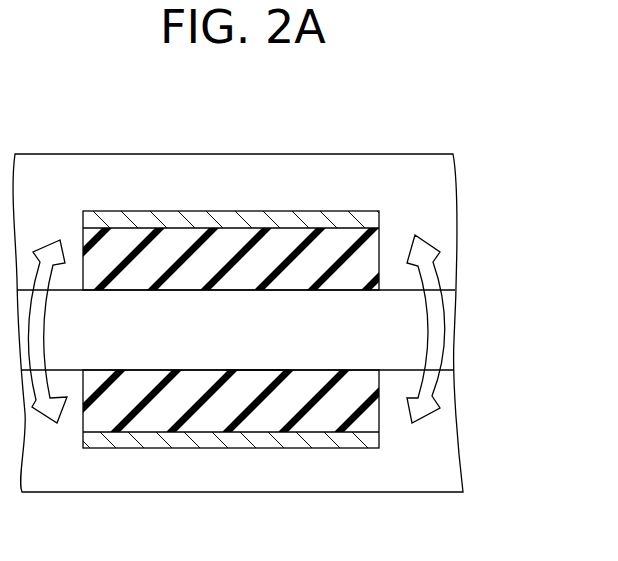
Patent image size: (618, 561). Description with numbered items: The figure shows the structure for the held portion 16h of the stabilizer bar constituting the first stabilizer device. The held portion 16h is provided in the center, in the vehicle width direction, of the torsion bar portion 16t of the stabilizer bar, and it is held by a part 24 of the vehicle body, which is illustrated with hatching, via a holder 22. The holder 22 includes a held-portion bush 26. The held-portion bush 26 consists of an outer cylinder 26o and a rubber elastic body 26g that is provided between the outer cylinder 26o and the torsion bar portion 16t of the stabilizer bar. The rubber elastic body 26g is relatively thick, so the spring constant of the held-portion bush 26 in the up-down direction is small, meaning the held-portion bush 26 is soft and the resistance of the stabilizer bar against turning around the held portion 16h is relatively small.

The holder 22 is at (355, 122).
The part of the vehicle body 24 is at (62, 172).
The held-portion bush 26 is at (338, 200).
The outer cylinder 26o is at (168, 220).
The rubber elastic body 26g is at (163, 417).
The torsion bar portion 16t is at (448, 305).
The held portion 16h is at (253, 377).